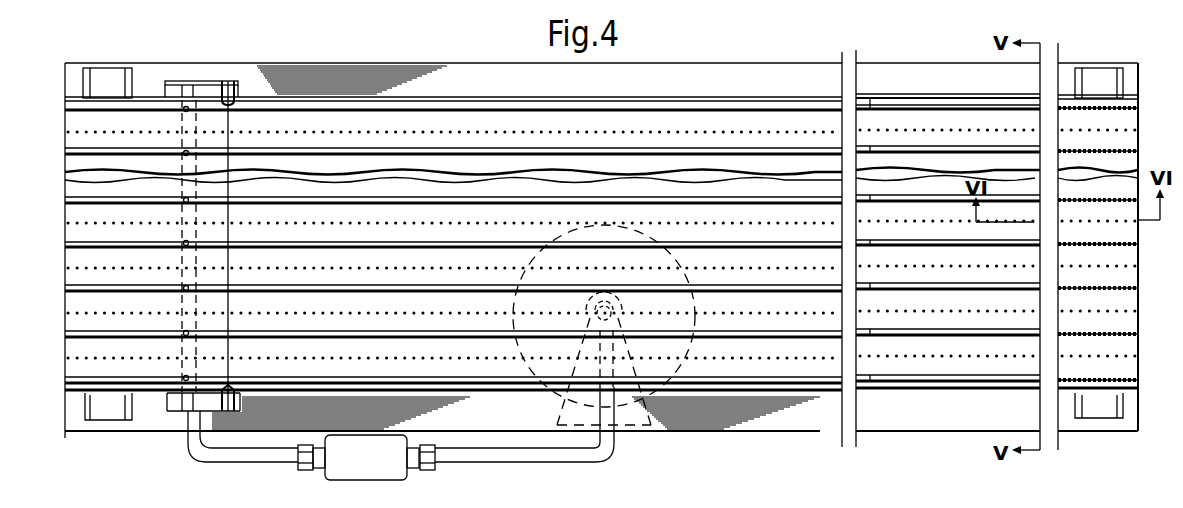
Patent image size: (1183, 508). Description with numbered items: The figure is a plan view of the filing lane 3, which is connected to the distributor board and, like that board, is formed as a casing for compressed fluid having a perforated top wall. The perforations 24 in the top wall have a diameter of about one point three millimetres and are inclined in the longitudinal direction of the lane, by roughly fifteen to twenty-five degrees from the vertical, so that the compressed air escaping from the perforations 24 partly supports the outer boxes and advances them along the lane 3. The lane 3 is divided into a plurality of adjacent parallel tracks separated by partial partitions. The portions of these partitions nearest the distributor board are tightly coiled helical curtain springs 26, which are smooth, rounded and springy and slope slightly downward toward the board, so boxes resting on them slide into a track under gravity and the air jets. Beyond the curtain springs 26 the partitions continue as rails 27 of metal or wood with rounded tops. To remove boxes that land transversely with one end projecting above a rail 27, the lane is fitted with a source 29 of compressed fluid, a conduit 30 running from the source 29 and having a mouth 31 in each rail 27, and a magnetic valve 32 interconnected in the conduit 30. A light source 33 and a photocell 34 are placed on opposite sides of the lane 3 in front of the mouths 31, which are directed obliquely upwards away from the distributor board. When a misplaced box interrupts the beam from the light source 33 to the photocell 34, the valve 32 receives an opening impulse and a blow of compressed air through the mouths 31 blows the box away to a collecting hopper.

The filing lane 3 is at (120, 440).
The perforations 24 is at (390, 225).
The curtain springs 26 is at (1128, 247).
The rails 27 is at (72, 383).
The source of compressed fluid 29 is at (533, 400).
The conduit 30 is at (230, 458).
The mouth 31 is at (187, 287).
The valve 32 is at (369, 470).
The light source 33 is at (222, 398).
The photocell 34 is at (226, 85).